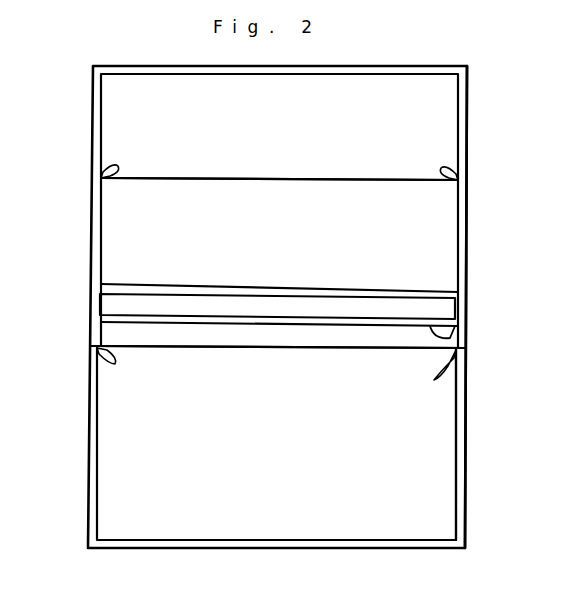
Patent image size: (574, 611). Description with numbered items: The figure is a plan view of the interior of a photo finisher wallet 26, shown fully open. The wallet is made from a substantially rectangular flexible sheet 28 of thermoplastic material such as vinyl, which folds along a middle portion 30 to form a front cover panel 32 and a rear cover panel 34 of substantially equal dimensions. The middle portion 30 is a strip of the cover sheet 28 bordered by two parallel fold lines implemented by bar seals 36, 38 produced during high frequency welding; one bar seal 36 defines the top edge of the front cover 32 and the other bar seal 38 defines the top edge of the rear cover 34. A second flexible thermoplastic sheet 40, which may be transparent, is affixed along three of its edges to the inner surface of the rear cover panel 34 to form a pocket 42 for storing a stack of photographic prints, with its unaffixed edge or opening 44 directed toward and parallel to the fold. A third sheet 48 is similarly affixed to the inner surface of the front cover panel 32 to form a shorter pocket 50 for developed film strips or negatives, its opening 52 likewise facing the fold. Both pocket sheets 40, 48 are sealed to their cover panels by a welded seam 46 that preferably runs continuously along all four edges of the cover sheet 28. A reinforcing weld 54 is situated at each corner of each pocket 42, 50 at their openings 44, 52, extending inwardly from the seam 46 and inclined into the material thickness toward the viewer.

The photo finisher wallet 26 is at (478, 214).
The flexible sheet 28 is at (468, 276).
The middle portion 30 is at (283, 300).
The front cover portion or panel 32 is at (305, 240).
The rear cover portion or panel 34 is at (331, 335).
The bar seal 36 is at (370, 297).
The bar seal 38 is at (445, 336).
The second flexible thermoplastic sheet 40 is at (420, 462).
The pocket 42 is at (112, 335).
The unaffixed edge or opening 44 is at (150, 347).
The welded seam 46 is at (459, 438).
The third flexible thermoplastic sheet 48 is at (450, 130).
The pocket 50 is at (162, 188).
The unaffixed edge or opening 52 is at (212, 178).
The reinforcing weld 54 is at (104, 166).